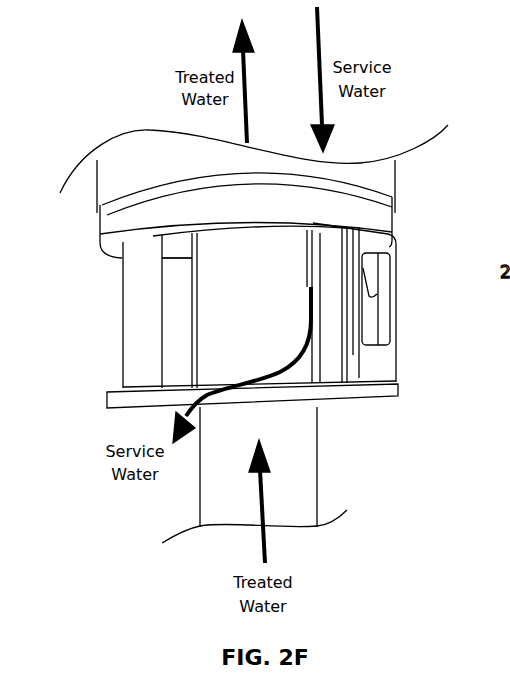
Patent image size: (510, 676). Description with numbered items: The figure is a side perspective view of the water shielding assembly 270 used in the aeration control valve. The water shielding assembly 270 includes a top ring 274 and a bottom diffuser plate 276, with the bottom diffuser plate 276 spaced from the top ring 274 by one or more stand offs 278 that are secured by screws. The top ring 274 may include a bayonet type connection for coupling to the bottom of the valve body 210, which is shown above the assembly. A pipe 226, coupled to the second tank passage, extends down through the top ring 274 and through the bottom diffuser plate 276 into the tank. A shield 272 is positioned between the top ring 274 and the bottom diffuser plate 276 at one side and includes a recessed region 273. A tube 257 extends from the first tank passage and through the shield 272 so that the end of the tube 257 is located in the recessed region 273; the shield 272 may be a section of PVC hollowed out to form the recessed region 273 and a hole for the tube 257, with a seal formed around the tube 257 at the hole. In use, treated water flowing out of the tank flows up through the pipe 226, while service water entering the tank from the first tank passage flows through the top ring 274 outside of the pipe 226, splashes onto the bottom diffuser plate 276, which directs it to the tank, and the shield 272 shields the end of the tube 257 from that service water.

The valve body 210 is at (392, 185).
The pipe 226 is at (210, 262).
The tube 257 is at (367, 292).
The water shielding assembly 270 is at (393, 441).
The shield 272 is at (332, 362).
The recessed region 273 is at (385, 275).
The top ring 274 is at (115, 233).
The bottom diffuser plate 276 is at (107, 398).
The stand offs 278 is at (132, 348).